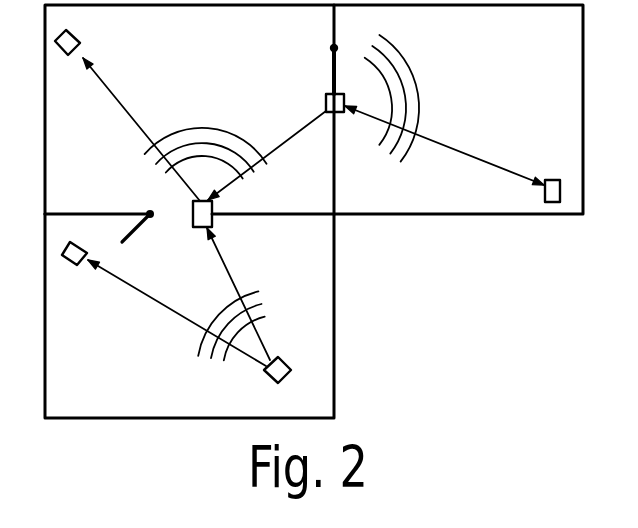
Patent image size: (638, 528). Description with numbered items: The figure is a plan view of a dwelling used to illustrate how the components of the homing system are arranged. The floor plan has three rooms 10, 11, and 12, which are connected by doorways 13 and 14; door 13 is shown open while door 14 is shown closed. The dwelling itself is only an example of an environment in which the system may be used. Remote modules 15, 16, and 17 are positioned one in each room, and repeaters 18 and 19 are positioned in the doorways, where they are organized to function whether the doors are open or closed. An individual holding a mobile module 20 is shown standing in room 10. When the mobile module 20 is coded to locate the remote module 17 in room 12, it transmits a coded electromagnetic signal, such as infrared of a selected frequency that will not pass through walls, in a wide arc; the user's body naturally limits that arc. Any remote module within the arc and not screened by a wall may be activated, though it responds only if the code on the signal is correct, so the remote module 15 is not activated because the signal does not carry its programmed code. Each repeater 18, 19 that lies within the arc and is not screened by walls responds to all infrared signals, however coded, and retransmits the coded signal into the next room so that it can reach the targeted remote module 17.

The room 10 is at (116, 383).
The room 11 is at (91, 164).
The room 12 is at (521, 57).
The doorway 13 is at (140, 226).
The doorway 14 is at (332, 62).
The remote module 15 is at (67, 265).
The remote module 16 is at (77, 35).
The remote module 17 is at (551, 180).
The repeater 18 is at (213, 220).
The repeater 19 is at (344, 113).
The mobile module 20 is at (287, 360).